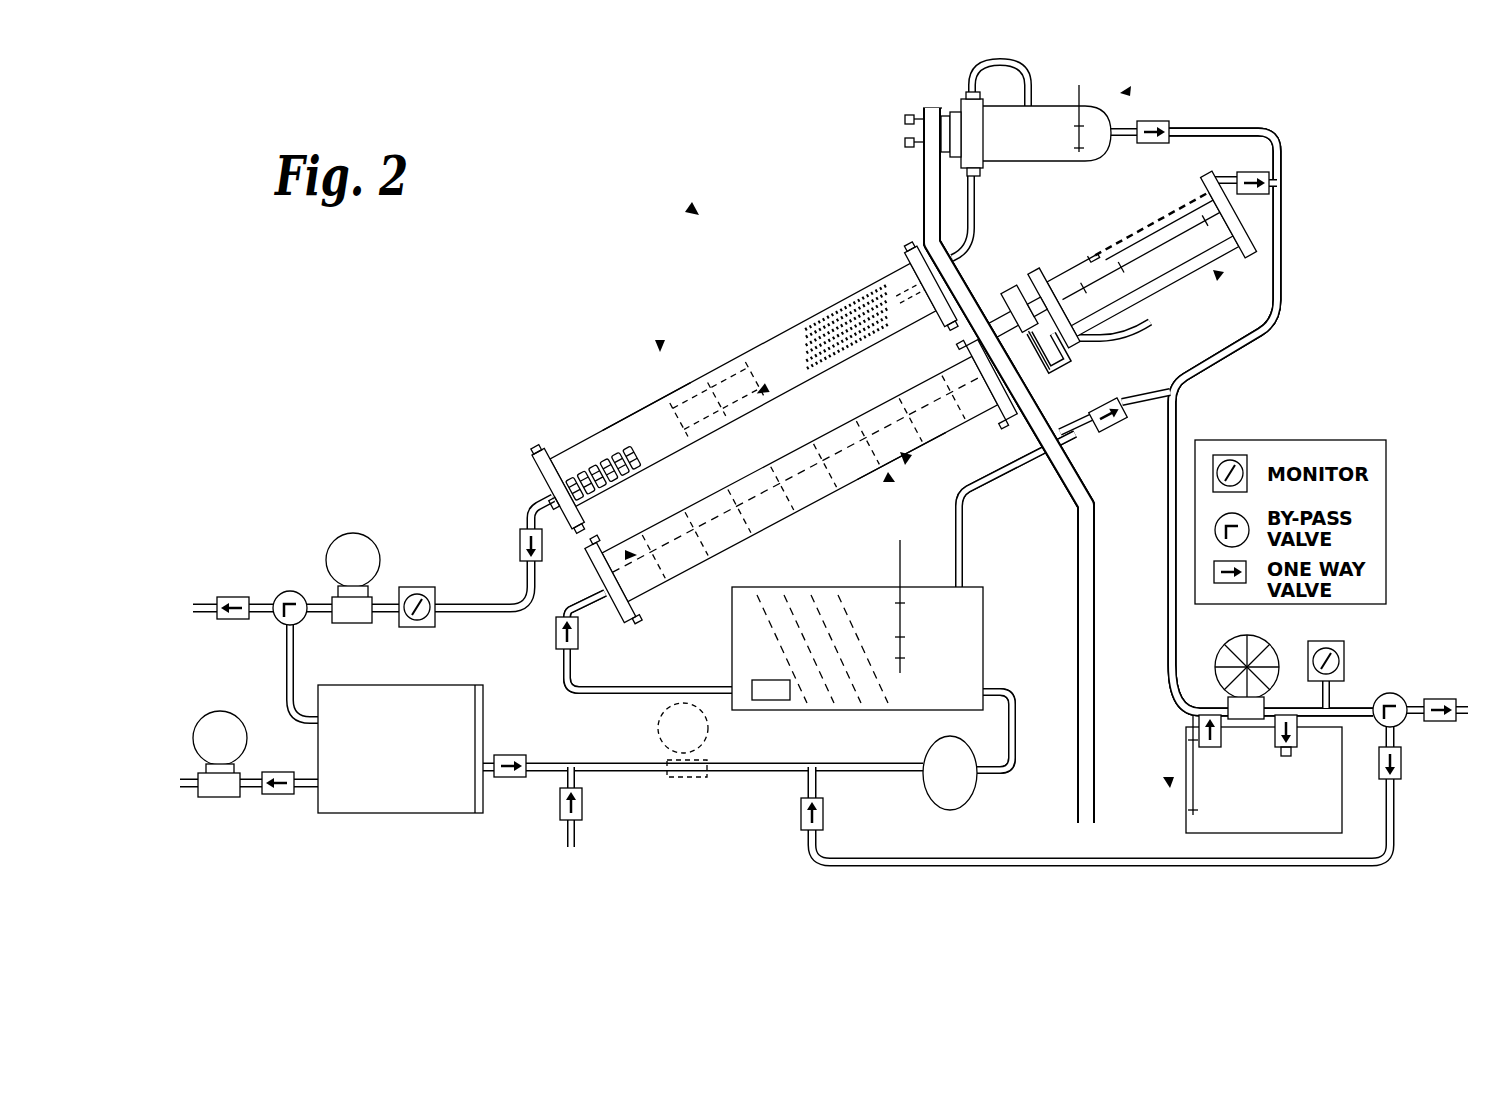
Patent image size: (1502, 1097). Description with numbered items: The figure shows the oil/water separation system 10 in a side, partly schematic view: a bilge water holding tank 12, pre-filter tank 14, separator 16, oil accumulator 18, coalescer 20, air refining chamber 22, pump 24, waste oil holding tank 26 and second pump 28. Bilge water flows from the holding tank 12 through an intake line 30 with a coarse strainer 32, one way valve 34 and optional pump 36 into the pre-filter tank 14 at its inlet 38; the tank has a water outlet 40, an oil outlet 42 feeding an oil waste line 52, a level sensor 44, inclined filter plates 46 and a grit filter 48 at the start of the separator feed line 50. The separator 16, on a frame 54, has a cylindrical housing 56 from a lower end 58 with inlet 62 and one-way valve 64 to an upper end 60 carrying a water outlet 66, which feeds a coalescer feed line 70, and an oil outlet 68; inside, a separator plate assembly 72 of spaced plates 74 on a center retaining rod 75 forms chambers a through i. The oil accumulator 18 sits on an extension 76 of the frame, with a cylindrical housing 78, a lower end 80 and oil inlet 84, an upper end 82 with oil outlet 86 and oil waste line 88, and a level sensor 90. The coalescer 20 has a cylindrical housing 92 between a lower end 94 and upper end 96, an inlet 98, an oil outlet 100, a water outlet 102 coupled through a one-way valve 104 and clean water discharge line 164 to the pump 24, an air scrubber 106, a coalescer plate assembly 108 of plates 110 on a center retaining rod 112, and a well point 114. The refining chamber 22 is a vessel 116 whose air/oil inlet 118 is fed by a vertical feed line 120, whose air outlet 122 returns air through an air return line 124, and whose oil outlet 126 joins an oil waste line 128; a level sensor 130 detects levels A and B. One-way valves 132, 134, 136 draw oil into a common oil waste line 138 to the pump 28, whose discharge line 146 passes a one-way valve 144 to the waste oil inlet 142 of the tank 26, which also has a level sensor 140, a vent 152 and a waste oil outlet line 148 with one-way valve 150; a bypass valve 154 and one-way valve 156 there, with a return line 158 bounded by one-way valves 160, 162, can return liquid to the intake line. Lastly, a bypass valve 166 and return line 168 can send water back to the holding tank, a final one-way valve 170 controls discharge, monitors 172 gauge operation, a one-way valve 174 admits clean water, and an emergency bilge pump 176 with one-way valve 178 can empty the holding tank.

The separation system 10 is at (691, 210).
The bilge water holding tank 12 is at (430, 685).
The pre-filter tank 14 is at (880, 588).
The separator 16 is at (890, 480).
The oil accumulator 18 is at (1218, 275).
The coalescer 20 is at (660, 345).
The air refining chamber 22 is at (1125, 88).
The pump 24 is at (340, 535).
The waste oil holding tank 26 is at (1168, 782).
The second pump 28 is at (1265, 645).
The intake line 30 is at (640, 765).
The coarse strainer 32 is at (963, 810).
The one way valve 34 is at (515, 755).
The optional pump 36 is at (708, 730).
The inlet 38 is at (995, 690).
The water outlet 40 is at (735, 680).
The oil outlet 42 is at (972, 575).
The level sensor 44 is at (905, 565).
The filter plates 46 is at (770, 610).
The grit filter 48 is at (775, 700).
The separator feed line 50 is at (650, 690).
The oil waste line 52 is at (968, 530).
The frame 54 is at (1100, 500).
The cylindrical housing 56 is at (905, 458).
The lower end 58 is at (640, 624).
The upper end 60 is at (1005, 428).
The inlet 62 is at (600, 575).
The one-way valve 64 is at (580, 634).
The water outlet 66 is at (1042, 382).
The oil outlet 68 is at (982, 338).
The coalescer feed line 70 is at (1062, 352).
The separator plate assembly 72 is at (622, 555).
The plates 74 is at (745, 500).
The center retaining rod 75 is at (790, 465).
The extension 76 is at (1150, 292).
The cylindrical housing 78 is at (1120, 240).
The lower end 80 is at (1115, 332).
The upper end 82 is at (1283, 255).
The oil inlet 84 is at (1030, 278).
The oil outlet 86 is at (1092, 250).
The oil waste line 88 is at (1275, 170).
The level sensor 90 is at (1142, 224).
The cylindrical housing 92 is at (640, 410).
The lower end 94 is at (540, 462).
The upper end 96 is at (908, 262).
The inlet 98 is at (983, 240).
The oil outlet 100 is at (922, 230).
The water outlet 102 is at (538, 480).
The one-way valve 104 is at (518, 545).
The air scrubber 106 is at (842, 305).
The coalescer plate assembly 108 is at (762, 393).
The plates 110 is at (706, 378).
The center retaining rod 112 is at (742, 390).
The well point 114 is at (585, 450).
The vessel 116 is at (1050, 164).
The air/oil inlet 118 is at (980, 170).
The feed line 120 is at (922, 195).
The air outlet 122 is at (965, 95).
The air return line 124 is at (1010, 62).
The oil outlet 126 is at (1158, 121).
The oil waste line 128 is at (1128, 136).
The level indicator 130 is at (1082, 92).
The one-way valve 132 is at (1113, 428).
The one-way valve 134 is at (1282, 212).
The one-way valve 136 is at (1215, 128).
The common oil waste line 138 is at (1280, 305).
The level sensor 140 is at (1190, 765).
The waste oil inlet 142 is at (1340, 828).
The one-way valve 144 is at (1345, 732).
The discharge line 146 is at (1400, 695).
The waste oil outlet line 148 is at (1215, 828).
The one-way valve 150 is at (1200, 725).
The vent 152 is at (1300, 712).
The bypass valve 154 is at (1445, 700).
The one-way valve 156 is at (1450, 722).
The return line 158 is at (1050, 865).
The one-way valve 160 is at (1402, 770).
The one-way valve 162 is at (797, 815).
The clean water discharge line 164 is at (200, 600).
The bypass valve 166 is at (285, 592).
The return line 168 is at (287, 670).
The final one-way valve 170 is at (225, 622).
The monitors 172 is at (417, 628).
The one-way valve 174 is at (560, 808).
The emergency bilge pump 176 is at (215, 712).
The one-way valve 178 is at (280, 795).